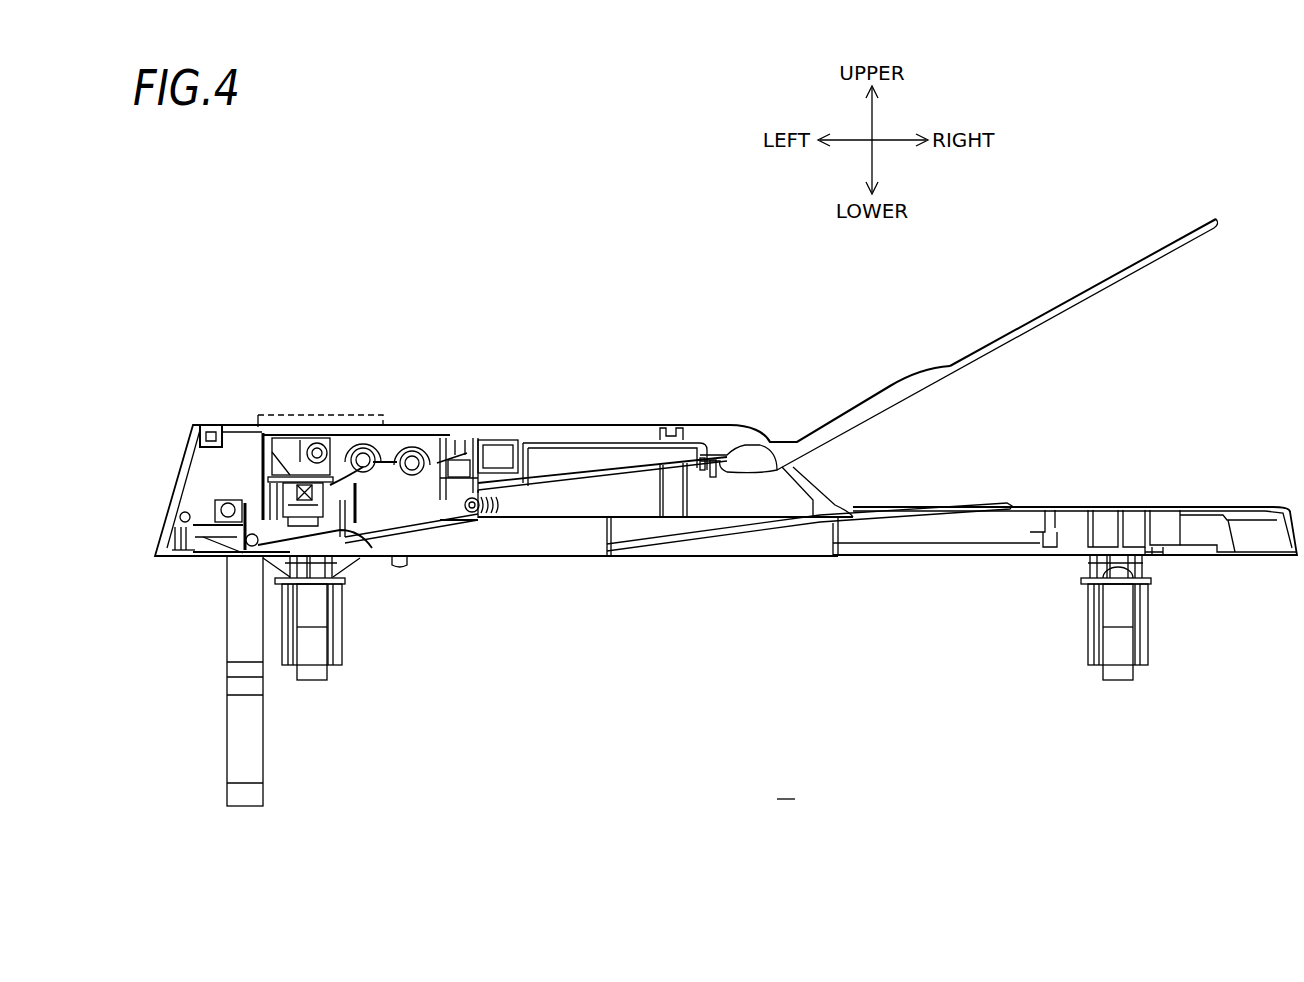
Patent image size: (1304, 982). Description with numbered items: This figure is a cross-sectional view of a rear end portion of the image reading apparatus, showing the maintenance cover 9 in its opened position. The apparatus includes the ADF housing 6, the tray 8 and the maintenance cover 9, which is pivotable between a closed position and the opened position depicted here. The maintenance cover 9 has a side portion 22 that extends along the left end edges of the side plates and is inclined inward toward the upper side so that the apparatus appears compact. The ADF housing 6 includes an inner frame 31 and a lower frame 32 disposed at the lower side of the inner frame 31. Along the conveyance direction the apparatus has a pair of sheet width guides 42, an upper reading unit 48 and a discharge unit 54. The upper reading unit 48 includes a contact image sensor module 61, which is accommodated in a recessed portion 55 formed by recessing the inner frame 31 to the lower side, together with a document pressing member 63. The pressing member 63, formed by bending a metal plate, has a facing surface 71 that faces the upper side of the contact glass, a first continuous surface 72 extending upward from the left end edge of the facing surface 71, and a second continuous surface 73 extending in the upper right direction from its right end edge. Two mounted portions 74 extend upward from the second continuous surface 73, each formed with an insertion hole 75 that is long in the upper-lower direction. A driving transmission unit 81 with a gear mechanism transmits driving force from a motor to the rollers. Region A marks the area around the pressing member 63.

The ADF housing 6 is at (1037, 654).
The tray 8 is at (1152, 262).
The maintenance cover 9 is at (437, 421).
The side portion 22 is at (181, 467).
The inner frame 31 is at (467, 523).
The lower frame 32 is at (428, 548).
The sheet width guides 42 is at (600, 455).
The upper reading unit 48 is at (232, 557).
The discharge unit 54 is at (902, 503).
The recessed portion 55 is at (333, 576).
The contact image sensor module 61 is at (268, 558).
The document pressing member 63 is at (262, 425).
The facing surface 71 is at (297, 437).
The first continuous surface 72 is at (262, 458).
The second continuous surface 73 is at (371, 548).
The mounted portion 74 is at (318, 440).
The insertion hole 75 is at (332, 440).
The driving transmission unit 81 is at (372, 440).
The region A is at (262, 400).